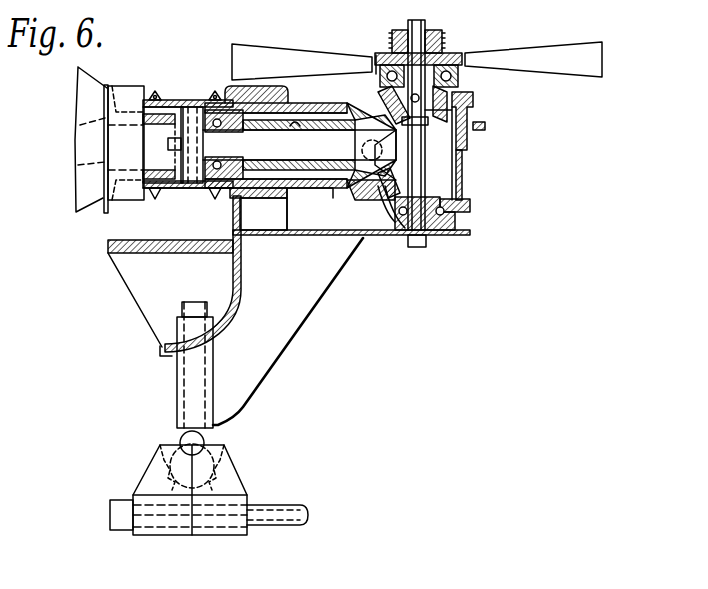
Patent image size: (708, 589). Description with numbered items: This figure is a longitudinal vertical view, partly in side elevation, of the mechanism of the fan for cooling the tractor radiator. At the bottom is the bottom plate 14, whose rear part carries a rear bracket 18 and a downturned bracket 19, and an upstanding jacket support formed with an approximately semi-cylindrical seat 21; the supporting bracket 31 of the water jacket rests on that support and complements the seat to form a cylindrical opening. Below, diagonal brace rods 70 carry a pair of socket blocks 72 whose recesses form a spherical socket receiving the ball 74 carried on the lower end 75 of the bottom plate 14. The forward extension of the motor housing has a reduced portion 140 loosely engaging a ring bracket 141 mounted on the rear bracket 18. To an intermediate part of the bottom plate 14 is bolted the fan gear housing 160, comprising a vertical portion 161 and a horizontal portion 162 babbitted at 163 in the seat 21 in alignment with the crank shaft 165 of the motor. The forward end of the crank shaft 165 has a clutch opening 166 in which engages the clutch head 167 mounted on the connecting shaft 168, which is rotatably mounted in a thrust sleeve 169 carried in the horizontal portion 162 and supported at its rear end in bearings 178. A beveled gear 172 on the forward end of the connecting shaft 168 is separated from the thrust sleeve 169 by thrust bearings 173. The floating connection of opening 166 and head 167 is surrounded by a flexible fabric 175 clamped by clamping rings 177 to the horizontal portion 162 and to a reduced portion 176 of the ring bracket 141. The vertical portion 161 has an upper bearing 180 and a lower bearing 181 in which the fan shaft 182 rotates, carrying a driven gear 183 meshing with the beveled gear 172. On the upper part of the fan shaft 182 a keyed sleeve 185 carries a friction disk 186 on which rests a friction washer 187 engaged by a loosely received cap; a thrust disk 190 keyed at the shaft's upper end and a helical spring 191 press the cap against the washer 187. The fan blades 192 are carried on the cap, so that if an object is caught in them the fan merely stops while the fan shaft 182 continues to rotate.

The bottom plate 14 is at (373, 237).
The rear bracket 18 is at (118, 253).
The downturned bracket 19 is at (177, 393).
The semi-cylindrical seat 21 is at (250, 208).
The supporting bracket 31 is at (252, 86).
The diagonal brace rods 70 is at (262, 531).
The socket blocks 72 is at (200, 555).
The ball 74 is at (165, 454).
The lower end of the bottom plate 75 is at (180, 438).
The reduced portion 140 is at (110, 88).
The ring bracket 141 is at (132, 86).
The fan gear housing 160 is at (464, 179).
The vertical portion 161 is at (462, 164).
The horizontal portion 162 is at (345, 186).
The babbitt 163 is at (288, 101).
The crank shaft 165 is at (108, 121).
The clutch opening 166 is at (170, 147).
The clutch head 167 is at (190, 199).
The connecting shaft 168 is at (330, 126).
The thrust sleeve 169 is at (299, 141).
The beveled gear 172 is at (372, 203).
The thrust bearings 173 is at (360, 155).
The flexible fabric 175 is at (187, 145).
The reduced portion 176 is at (176, 104).
The clamping rings 177 is at (215, 92).
The bearings 178 is at (225, 144).
The upper bearing 180 is at (462, 96).
The lower bearing 181 is at (456, 221).
The fan shaft 182 is at (468, 207).
The driven gear 183 is at (476, 123).
The sleeve 185 is at (445, 49).
The friction disk 186 is at (460, 67).
The friction washer 187 is at (460, 57).
The thrust disk 190 is at (402, 43).
The helical spring 191 is at (445, 37).
The fan blades 192 is at (598, 69).